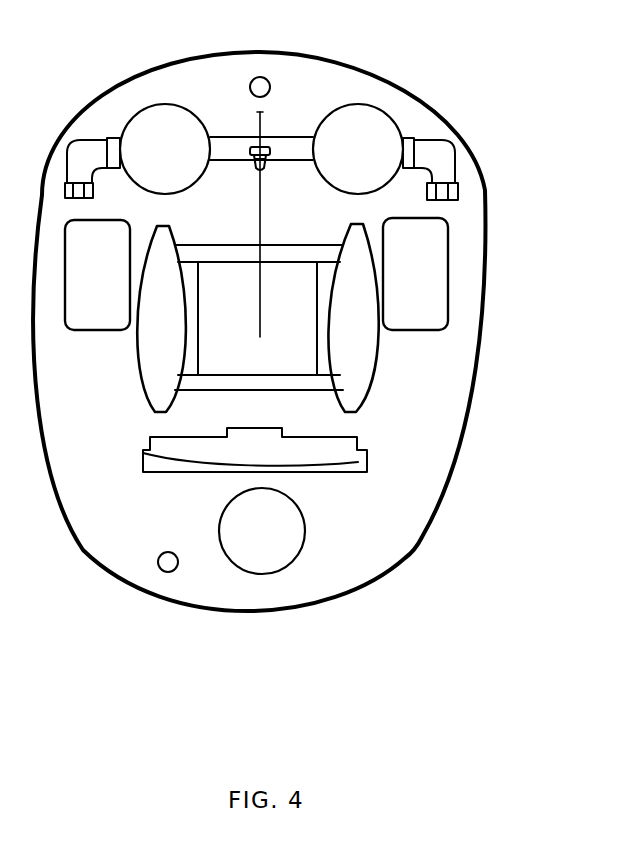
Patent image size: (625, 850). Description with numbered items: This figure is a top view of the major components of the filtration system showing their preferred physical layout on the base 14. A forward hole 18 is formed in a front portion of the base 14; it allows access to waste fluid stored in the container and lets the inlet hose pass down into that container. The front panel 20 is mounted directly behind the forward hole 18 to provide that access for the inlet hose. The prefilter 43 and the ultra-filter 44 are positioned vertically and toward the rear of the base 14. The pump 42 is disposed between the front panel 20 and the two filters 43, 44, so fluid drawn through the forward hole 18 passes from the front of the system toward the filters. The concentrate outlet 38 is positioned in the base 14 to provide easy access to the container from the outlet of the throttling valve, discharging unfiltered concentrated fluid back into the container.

The base 14 is at (95, 450).
The forward hole 18 is at (272, 541).
The front panel 20 is at (356, 463).
The concentrate outlet 38 is at (266, 82).
The pump 42 is at (303, 311).
The prefilter 43 is at (370, 161).
The ultra-filter 44 is at (175, 161).